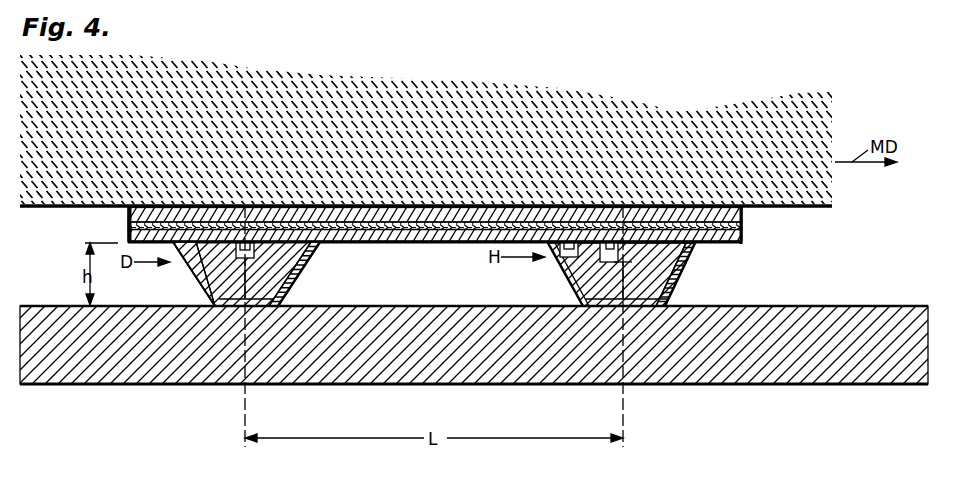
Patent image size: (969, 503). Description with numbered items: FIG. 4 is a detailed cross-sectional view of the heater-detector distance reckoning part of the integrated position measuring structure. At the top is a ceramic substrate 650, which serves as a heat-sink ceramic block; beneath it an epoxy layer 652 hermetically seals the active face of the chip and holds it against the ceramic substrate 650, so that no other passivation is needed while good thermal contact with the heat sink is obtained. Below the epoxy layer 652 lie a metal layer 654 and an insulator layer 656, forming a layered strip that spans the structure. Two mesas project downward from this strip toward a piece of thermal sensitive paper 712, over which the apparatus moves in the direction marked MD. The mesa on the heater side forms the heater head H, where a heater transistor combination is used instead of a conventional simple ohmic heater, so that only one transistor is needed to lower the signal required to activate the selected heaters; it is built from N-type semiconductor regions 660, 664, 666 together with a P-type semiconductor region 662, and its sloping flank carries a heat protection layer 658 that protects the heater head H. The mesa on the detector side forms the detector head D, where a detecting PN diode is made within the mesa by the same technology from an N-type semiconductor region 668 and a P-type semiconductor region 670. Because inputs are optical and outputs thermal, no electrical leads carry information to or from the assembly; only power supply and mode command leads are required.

The ceramic substrate 650 is at (822, 118).
The epoxy layer 652 is at (743, 215).
The metal layer 654 is at (743, 233).
The insulator layer 656 is at (726, 245).
The heat protection layer 658 is at (316, 249).
The N-type semiconductor region 660 is at (672, 307).
The P-type semiconductor region 662 is at (662, 307).
The N-type semiconductor region 664 is at (588, 281).
The N-type semiconductor region 666 is at (572, 258).
The N-type semiconductor region 668 is at (287, 268).
The P-type semiconductor region 670 is at (196, 272).
The thermal sensitive paper 712 is at (470, 306).